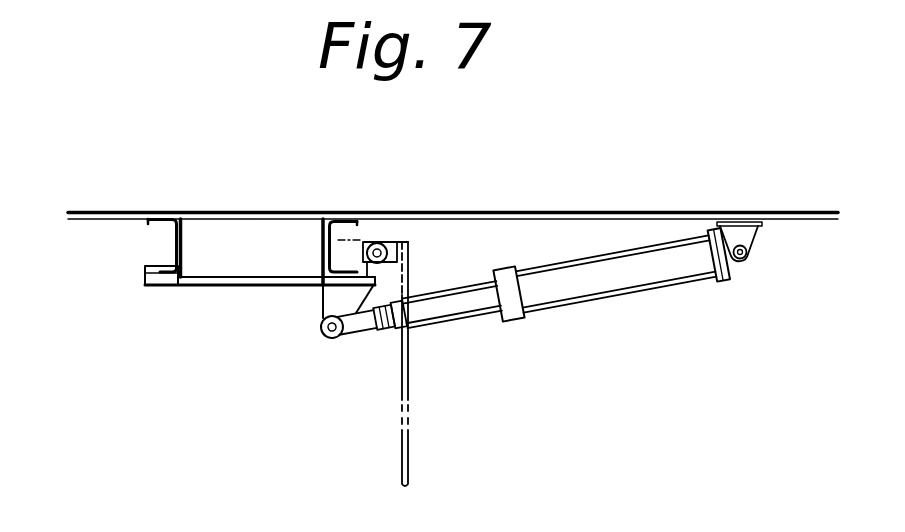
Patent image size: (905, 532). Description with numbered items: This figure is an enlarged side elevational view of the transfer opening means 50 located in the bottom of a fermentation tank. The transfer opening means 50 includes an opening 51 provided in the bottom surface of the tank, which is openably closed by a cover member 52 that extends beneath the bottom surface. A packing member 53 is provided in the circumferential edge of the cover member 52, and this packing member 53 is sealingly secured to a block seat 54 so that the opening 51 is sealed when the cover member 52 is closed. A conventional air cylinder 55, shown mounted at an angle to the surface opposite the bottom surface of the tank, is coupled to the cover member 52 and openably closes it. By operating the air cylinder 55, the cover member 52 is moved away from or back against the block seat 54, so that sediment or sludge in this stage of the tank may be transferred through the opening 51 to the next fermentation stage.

The transfer opening means 50 is at (373, 176).
The opening 51 is at (219, 212).
The cover member 52 is at (216, 294).
The packing member 53 is at (160, 287).
The block seat 54 is at (160, 266).
The air cylinder 55 is at (562, 310).